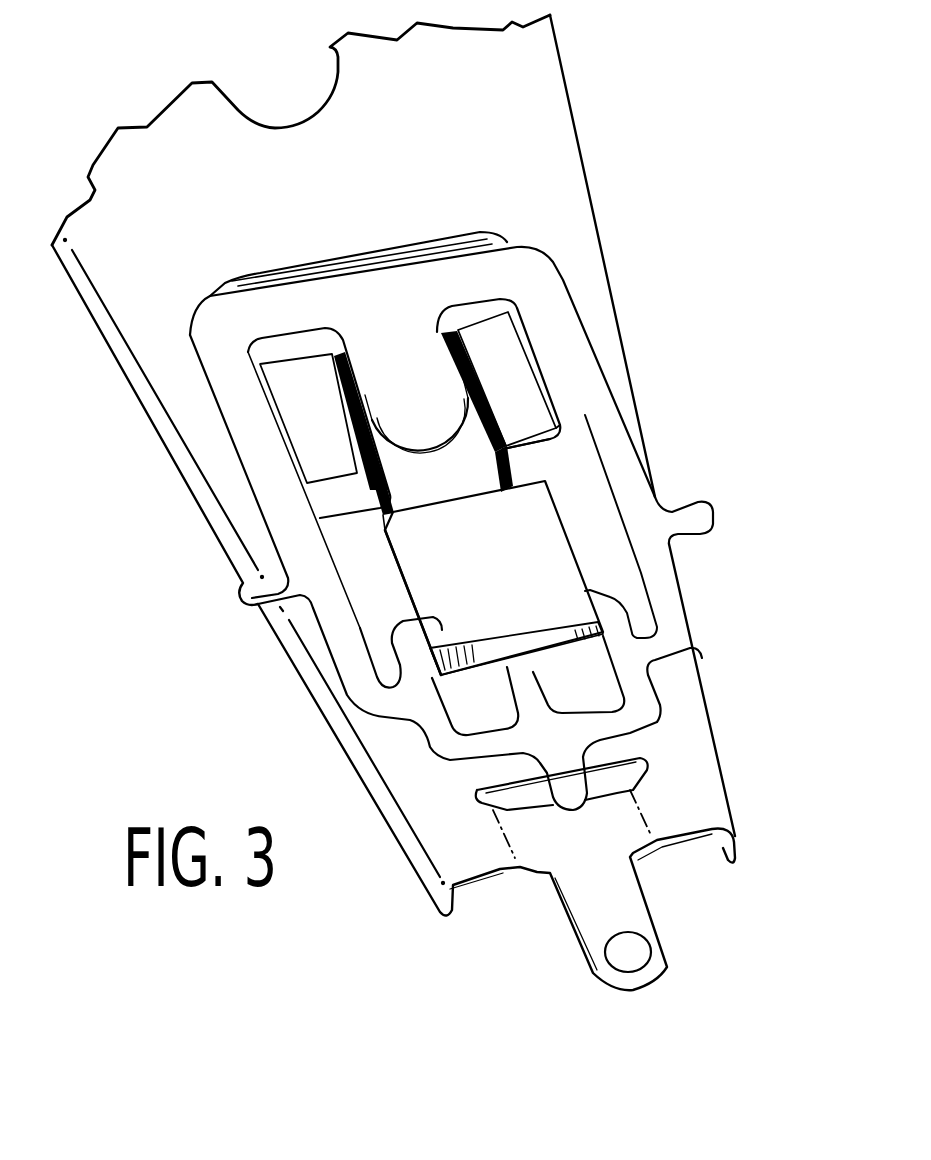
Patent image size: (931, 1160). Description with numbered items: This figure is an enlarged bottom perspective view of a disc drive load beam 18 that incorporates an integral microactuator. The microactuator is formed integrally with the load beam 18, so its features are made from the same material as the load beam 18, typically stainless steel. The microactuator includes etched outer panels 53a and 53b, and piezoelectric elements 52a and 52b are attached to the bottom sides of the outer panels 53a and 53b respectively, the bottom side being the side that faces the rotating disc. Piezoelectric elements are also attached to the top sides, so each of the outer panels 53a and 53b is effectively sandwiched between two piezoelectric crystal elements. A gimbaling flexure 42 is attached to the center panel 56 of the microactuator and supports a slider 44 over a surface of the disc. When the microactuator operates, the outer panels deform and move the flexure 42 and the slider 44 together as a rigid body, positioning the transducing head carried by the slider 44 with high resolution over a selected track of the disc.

The load beam 18 is at (550, 160).
The gimbaling flexure 42 is at (630, 493).
The slider 44 is at (547, 577).
The piezoelectric element 52a is at (503, 353).
The piezoelectric element 52b is at (317, 423).
The outer panel 53a is at (562, 445).
The outer panel 53b is at (423, 467).
The center panel 56 is at (393, 498).